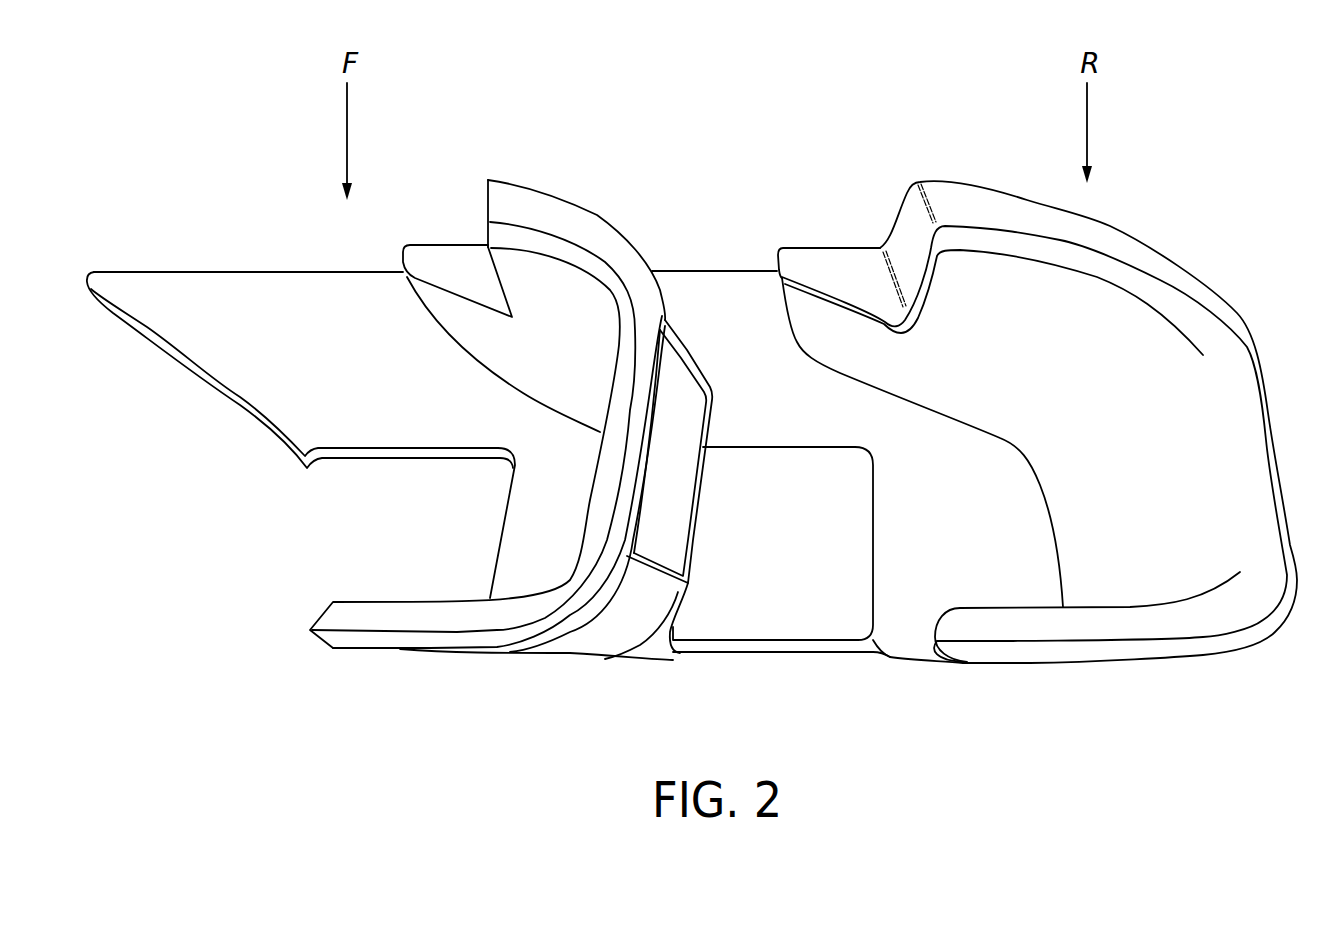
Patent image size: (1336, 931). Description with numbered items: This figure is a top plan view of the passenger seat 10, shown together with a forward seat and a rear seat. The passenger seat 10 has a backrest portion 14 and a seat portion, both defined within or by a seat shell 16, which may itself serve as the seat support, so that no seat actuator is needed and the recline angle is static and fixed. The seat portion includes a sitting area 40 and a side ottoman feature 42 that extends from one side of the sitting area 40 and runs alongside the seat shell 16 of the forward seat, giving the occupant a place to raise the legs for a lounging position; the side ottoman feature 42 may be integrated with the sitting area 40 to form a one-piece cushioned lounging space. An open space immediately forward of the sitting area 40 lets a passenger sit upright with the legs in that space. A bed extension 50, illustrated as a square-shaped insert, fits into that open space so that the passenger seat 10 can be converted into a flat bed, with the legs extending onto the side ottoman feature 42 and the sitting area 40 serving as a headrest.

The passenger seat 10 is at (1240, 235).
The backrest portion 14 is at (1162, 447).
The seat shell 16 is at (600, 213).
The sitting area 40 is at (950, 550).
The side ottoman feature 42 is at (745, 350).
The bed extension 50 is at (755, 607).